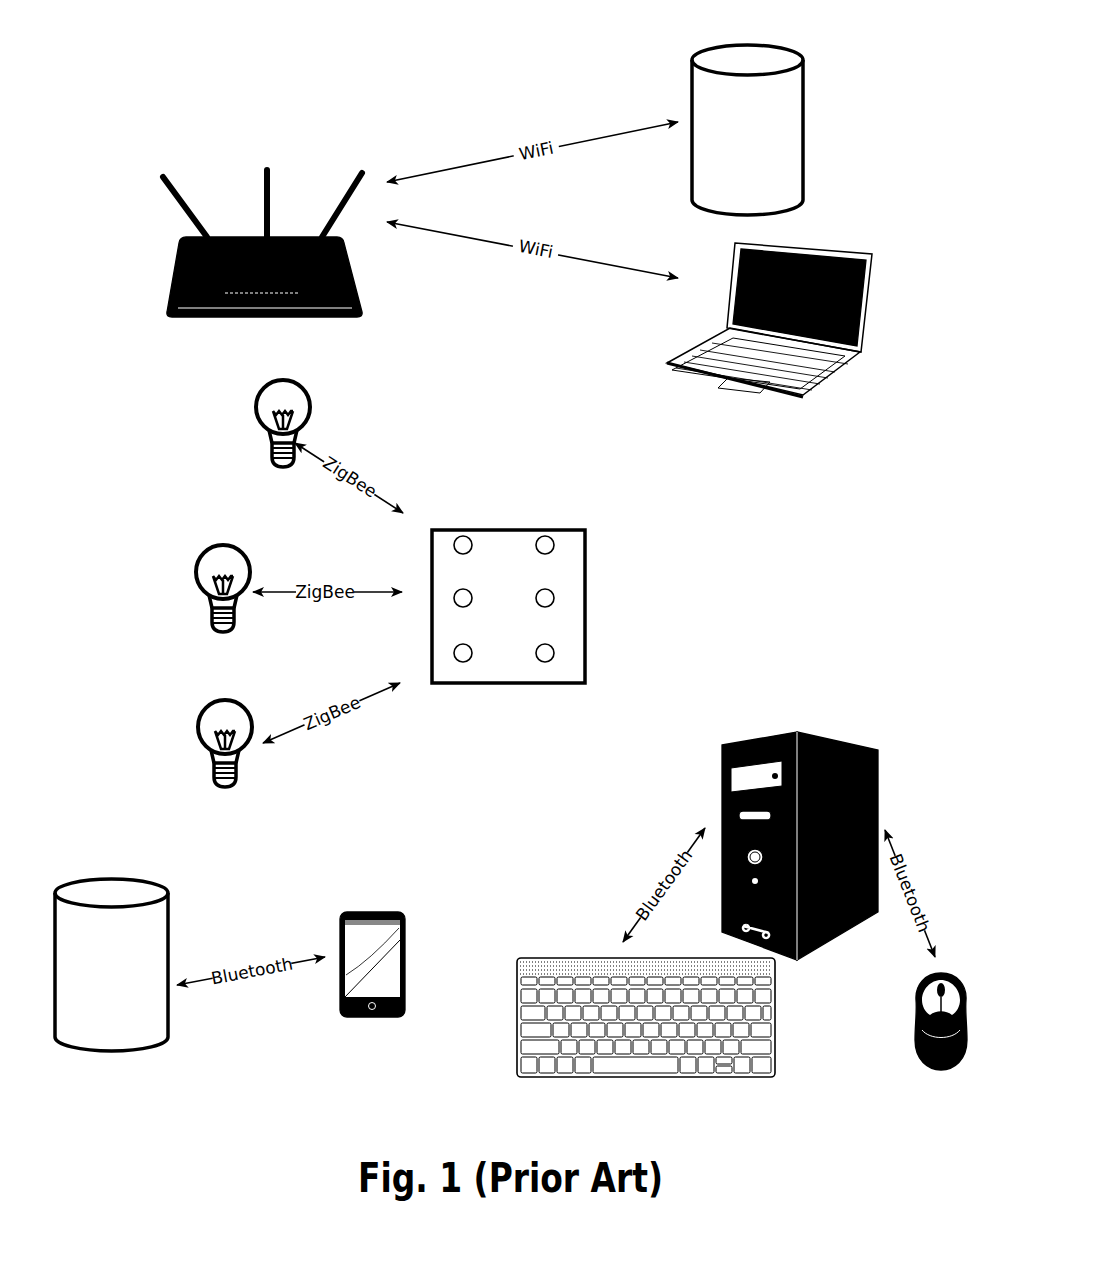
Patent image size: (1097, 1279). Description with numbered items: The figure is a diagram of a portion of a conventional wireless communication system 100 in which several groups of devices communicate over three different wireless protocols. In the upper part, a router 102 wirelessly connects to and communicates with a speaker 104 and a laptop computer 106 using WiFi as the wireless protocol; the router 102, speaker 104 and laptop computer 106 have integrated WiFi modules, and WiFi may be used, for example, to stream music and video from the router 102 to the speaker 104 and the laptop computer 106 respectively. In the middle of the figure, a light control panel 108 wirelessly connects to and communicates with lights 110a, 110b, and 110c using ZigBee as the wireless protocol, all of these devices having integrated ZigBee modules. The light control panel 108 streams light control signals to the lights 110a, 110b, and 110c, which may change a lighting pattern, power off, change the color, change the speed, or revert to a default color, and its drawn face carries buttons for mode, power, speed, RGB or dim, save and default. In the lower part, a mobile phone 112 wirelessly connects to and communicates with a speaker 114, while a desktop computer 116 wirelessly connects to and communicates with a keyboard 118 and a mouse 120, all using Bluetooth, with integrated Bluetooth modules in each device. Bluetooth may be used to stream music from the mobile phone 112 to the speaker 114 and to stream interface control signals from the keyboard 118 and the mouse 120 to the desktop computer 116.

The wireless communication system 100 is at (358, 74).
The router 102 is at (166, 176).
The speaker 104 is at (804, 98).
The laptop computer 106 is at (868, 295).
The light control panel 108 is at (510, 529).
The light 110a is at (256, 400).
The light 110b is at (194, 571).
The light 110c is at (196, 737).
The mobile phone 112 is at (400, 912).
The speaker 114 is at (128, 880).
The desktop computer 116 is at (824, 736).
The keyboard 118 is at (548, 957).
The mouse 120 is at (962, 978).